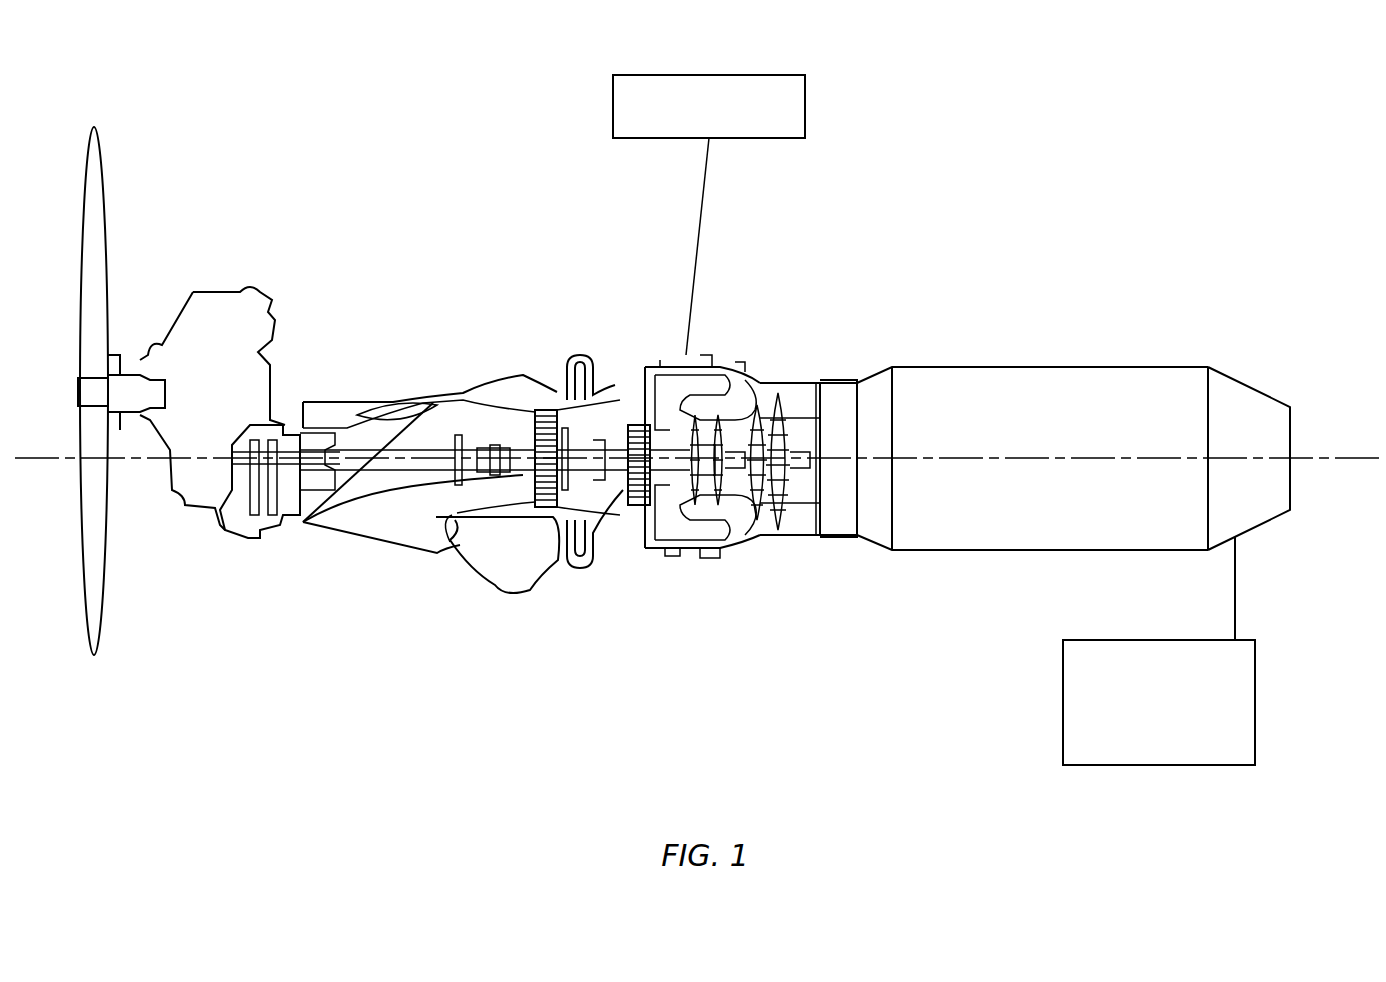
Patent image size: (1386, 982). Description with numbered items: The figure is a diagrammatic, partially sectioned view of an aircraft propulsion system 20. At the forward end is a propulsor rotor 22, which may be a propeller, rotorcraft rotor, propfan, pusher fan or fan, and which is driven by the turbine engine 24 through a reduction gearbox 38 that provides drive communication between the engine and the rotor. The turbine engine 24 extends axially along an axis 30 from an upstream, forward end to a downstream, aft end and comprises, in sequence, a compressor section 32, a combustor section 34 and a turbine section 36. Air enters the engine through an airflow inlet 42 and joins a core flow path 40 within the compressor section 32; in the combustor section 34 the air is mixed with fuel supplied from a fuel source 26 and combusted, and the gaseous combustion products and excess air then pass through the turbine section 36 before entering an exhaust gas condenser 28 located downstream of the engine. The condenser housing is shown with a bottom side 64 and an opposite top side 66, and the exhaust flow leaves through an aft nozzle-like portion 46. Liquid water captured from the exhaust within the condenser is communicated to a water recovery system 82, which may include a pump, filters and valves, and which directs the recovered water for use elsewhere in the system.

The propulsion system 20 is at (930, 120).
The propulsor rotor 22 is at (152, 128).
The turbine engine 24 is at (537, 222).
The fuel source 26 is at (720, 75).
The exhaust gas condenser 28 is at (1095, 277).
The axis 30 is at (1320, 458).
The compressor section 32 is at (583, 330).
The combustor section 34 is at (710, 345).
The turbine section 36 is at (770, 368).
The reduction gearbox 38 is at (247, 537).
The core flow path 40 is at (797, 520).
The airflow inlet 42 is at (372, 540).
The exhaust nozzle 46 is at (1250, 365).
The bottom side 64 is at (975, 552).
The top side 66 is at (983, 367).
The water recovery system 82 is at (1255, 670).